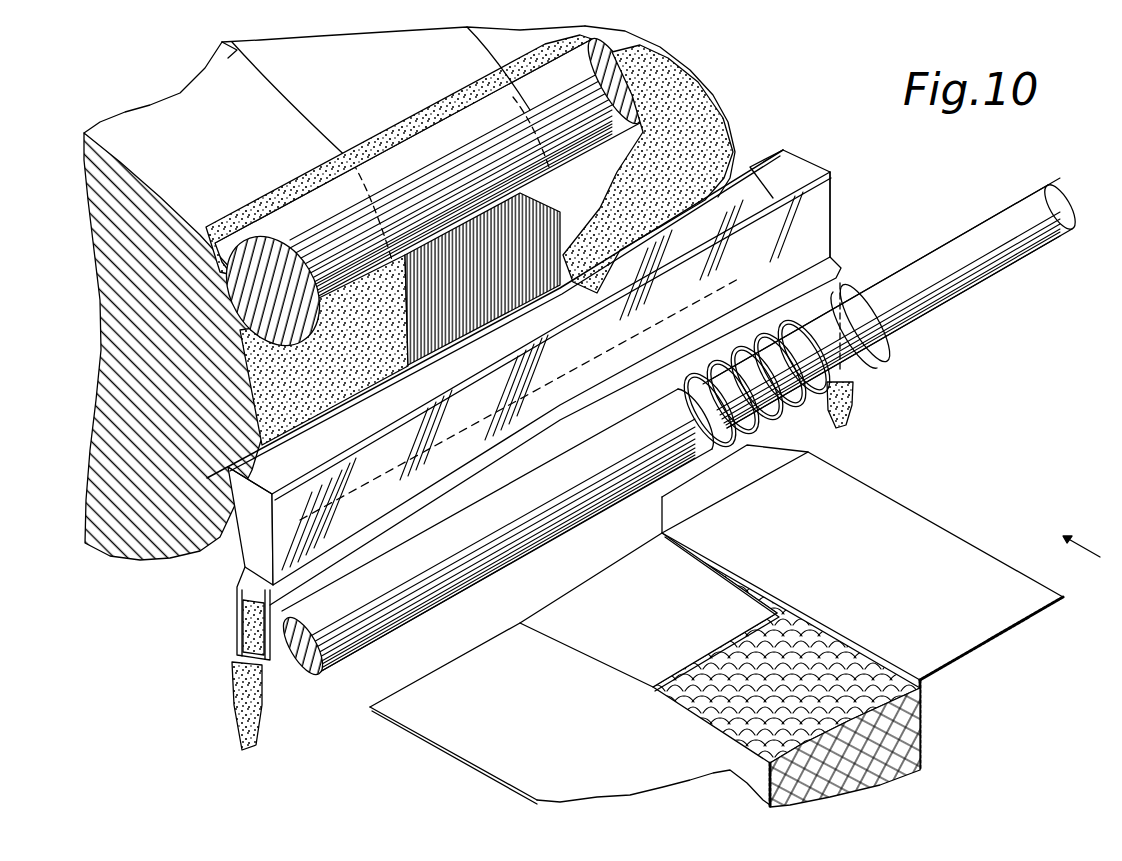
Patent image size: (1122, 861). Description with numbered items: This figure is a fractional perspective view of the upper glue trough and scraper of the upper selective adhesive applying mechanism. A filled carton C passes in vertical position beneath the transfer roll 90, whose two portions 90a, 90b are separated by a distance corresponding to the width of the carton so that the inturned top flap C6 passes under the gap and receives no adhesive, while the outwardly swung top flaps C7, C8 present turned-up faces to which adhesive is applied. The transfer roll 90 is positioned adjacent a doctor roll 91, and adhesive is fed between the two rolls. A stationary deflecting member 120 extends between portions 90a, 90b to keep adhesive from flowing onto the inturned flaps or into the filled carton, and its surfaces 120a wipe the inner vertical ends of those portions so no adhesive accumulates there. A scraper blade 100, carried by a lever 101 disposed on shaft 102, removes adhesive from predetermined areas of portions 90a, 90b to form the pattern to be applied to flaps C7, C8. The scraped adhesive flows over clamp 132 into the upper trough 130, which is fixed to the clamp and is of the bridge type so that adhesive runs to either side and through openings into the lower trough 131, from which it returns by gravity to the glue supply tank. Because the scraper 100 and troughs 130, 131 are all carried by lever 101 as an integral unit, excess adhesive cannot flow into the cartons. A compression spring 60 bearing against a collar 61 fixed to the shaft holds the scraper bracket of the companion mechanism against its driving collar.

The compression spring 60 is at (780, 413).
The collar 61 is at (873, 367).
The transfer roll 90 is at (110, 595).
The portion of transfer roll 90a is at (163, 107).
The portion of transfer roll 90b is at (637, 44).
The doctor roll 91 is at (423, 147).
The scraper blade 100 is at (717, 180).
The lever 101 is at (462, 600).
The shaft 102 is at (947, 240).
The deflecting member 120 is at (362, 71).
The surfaces of deflecting member 120a is at (230, 48).
The upper trough 130 is at (820, 203).
The lower trough 131 is at (837, 273).
The clamp 132 is at (767, 170).
The carton C is at (957, 732).
The top flap C6 is at (670, 630).
The top flap C7 is at (927, 520).
The top flap C8 is at (440, 747).